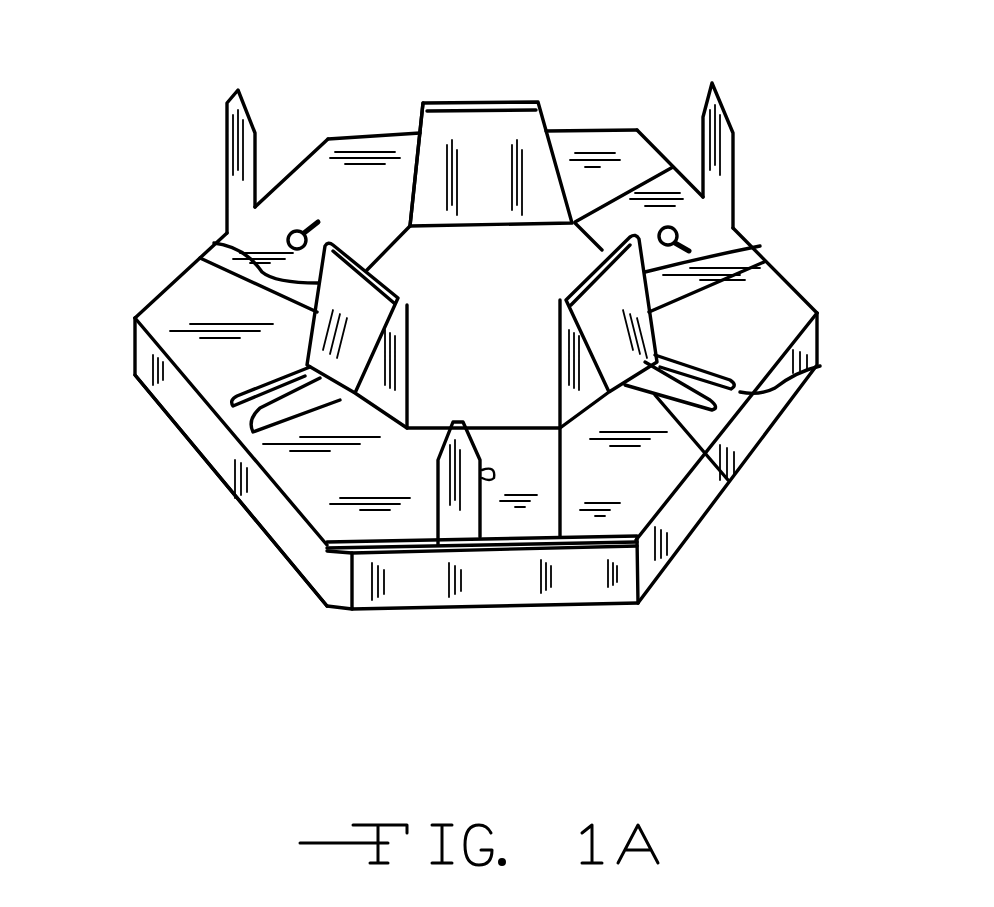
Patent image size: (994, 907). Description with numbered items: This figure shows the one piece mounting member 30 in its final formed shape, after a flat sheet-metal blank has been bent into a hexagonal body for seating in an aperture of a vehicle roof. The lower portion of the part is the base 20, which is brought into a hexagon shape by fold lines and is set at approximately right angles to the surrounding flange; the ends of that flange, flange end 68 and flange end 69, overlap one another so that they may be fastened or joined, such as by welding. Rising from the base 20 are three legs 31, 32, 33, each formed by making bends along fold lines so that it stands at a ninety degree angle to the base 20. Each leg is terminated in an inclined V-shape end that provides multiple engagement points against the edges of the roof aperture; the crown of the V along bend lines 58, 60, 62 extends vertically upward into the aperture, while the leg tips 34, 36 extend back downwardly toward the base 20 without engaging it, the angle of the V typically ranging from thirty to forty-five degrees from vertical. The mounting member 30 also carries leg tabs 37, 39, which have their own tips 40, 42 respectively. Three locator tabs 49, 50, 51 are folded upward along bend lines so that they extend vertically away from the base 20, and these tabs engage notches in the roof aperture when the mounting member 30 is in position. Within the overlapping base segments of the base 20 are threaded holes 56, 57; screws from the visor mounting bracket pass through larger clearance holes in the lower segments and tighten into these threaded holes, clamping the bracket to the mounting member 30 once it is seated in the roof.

The base 20 is at (212, 365).
The mounting member 30 is at (152, 208).
The leg 31 is at (214, 243).
The leg 32 is at (417, 115).
The leg 33 is at (760, 246).
The leg tip 34 is at (355, 408).
The leg tip 36 is at (728, 480).
The leg tab 37 is at (212, 463).
The leg tab 39 is at (820, 366).
The tip 40 is at (313, 348).
The tip 42 is at (653, 338).
The locator tab 49 is at (483, 513).
The locator tab 50 is at (226, 123).
The locator tab 51 is at (730, 108).
The threaded hole 56 is at (291, 228).
The threaded hole 57 is at (685, 233).
The bend line 58 is at (342, 258).
The bend line 60 is at (470, 102).
The bend line 62 is at (598, 273).
The flange end 68 is at (339, 600).
The flange end 69 is at (481, 593).